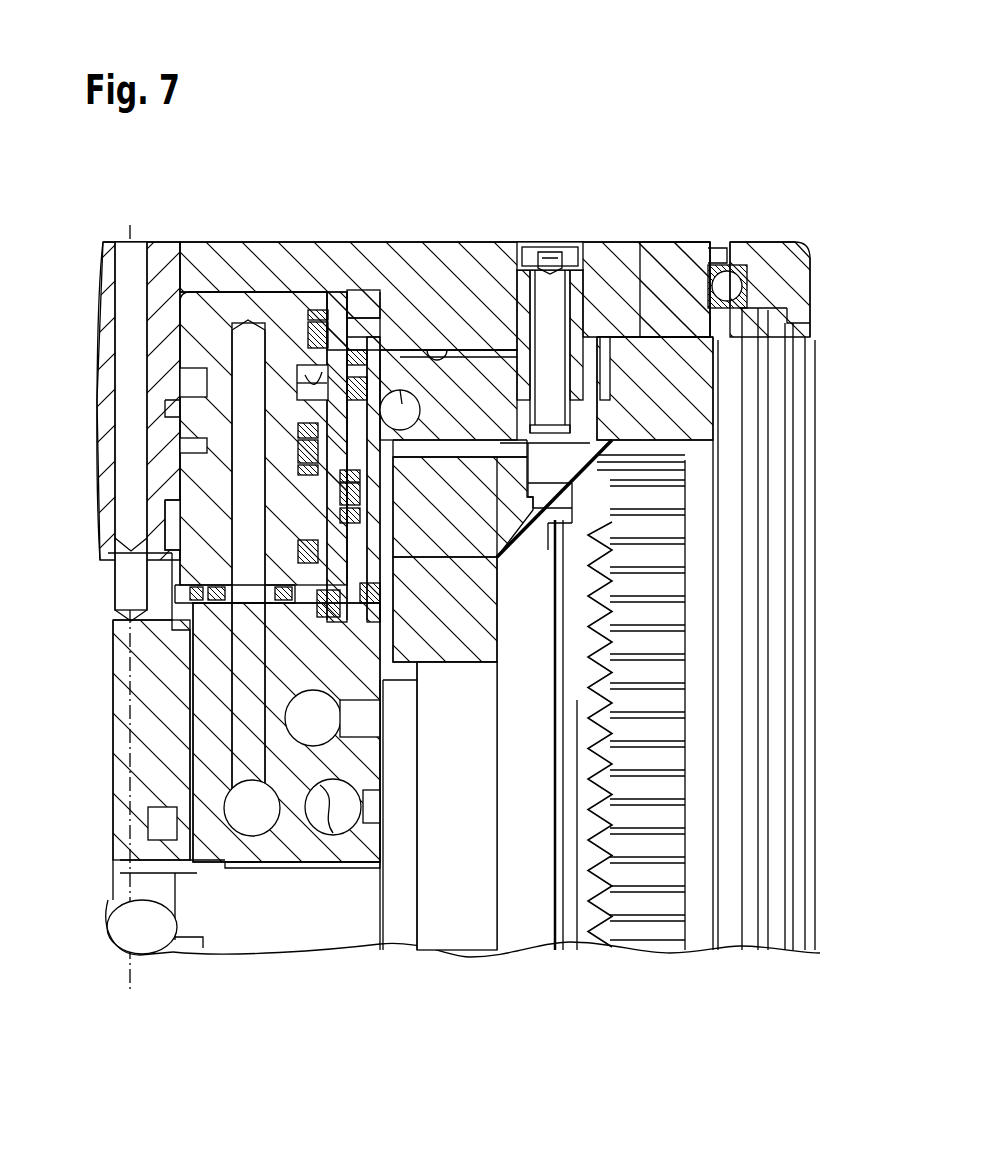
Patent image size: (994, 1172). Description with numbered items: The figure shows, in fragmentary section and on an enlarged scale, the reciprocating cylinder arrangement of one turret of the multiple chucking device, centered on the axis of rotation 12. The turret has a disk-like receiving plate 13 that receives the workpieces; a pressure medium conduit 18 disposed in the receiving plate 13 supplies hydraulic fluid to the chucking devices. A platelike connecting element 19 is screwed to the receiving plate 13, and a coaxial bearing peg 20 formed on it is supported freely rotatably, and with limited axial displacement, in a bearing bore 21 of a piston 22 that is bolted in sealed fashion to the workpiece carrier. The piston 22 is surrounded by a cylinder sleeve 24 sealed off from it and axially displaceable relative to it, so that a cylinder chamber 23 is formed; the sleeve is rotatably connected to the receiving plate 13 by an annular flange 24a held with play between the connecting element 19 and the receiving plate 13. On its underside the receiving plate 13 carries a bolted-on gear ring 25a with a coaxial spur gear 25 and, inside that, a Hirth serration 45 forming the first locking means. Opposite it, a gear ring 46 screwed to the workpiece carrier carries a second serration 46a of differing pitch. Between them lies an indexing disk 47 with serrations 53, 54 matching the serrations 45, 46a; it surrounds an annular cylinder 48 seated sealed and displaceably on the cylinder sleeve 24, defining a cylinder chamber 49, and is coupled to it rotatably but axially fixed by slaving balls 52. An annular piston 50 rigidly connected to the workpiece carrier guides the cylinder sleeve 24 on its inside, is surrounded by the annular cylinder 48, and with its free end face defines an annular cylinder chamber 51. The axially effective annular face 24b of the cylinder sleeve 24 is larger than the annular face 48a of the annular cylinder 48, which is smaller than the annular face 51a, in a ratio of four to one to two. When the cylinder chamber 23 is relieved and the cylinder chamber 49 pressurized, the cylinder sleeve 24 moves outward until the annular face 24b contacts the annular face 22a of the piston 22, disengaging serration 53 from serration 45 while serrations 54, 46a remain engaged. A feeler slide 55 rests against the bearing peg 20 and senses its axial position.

The axis of rotation 12 is at (126, 228).
The receiving plate 13 is at (677, 280).
The pressure medium conduit 18 is at (123, 270).
The connecting element 19 is at (247, 273).
The bearing peg 20 is at (157, 324).
The bearing bore 21 is at (158, 350).
The piston 22 is at (208, 313).
The annular face 22a is at (296, 383).
The cylinder chamber 23 is at (330, 405).
The cylinder sleeve 24 is at (343, 310).
The annular flange 24a is at (363, 303).
The annular face 24b is at (335, 440).
The spur gear 25 is at (600, 390).
The gear ring 25a is at (640, 452).
The Hirth serration 45 is at (453, 348).
The gear ring 46 is at (648, 565).
The second serration 46a is at (655, 458).
The indexing disk 47 is at (535, 455).
The annular cylinder 48 is at (430, 612).
The annular face 48a is at (345, 480).
The cylinder chamber 49 is at (330, 512).
The annular piston 50 is at (465, 623).
The annular cylinder chamber 51 is at (300, 565).
The annular face 51a is at (165, 562).
The slaving balls 52 is at (403, 390).
The serration 53 is at (477, 373).
The serration 54 is at (497, 377).
The feeler slide 55 is at (160, 740).